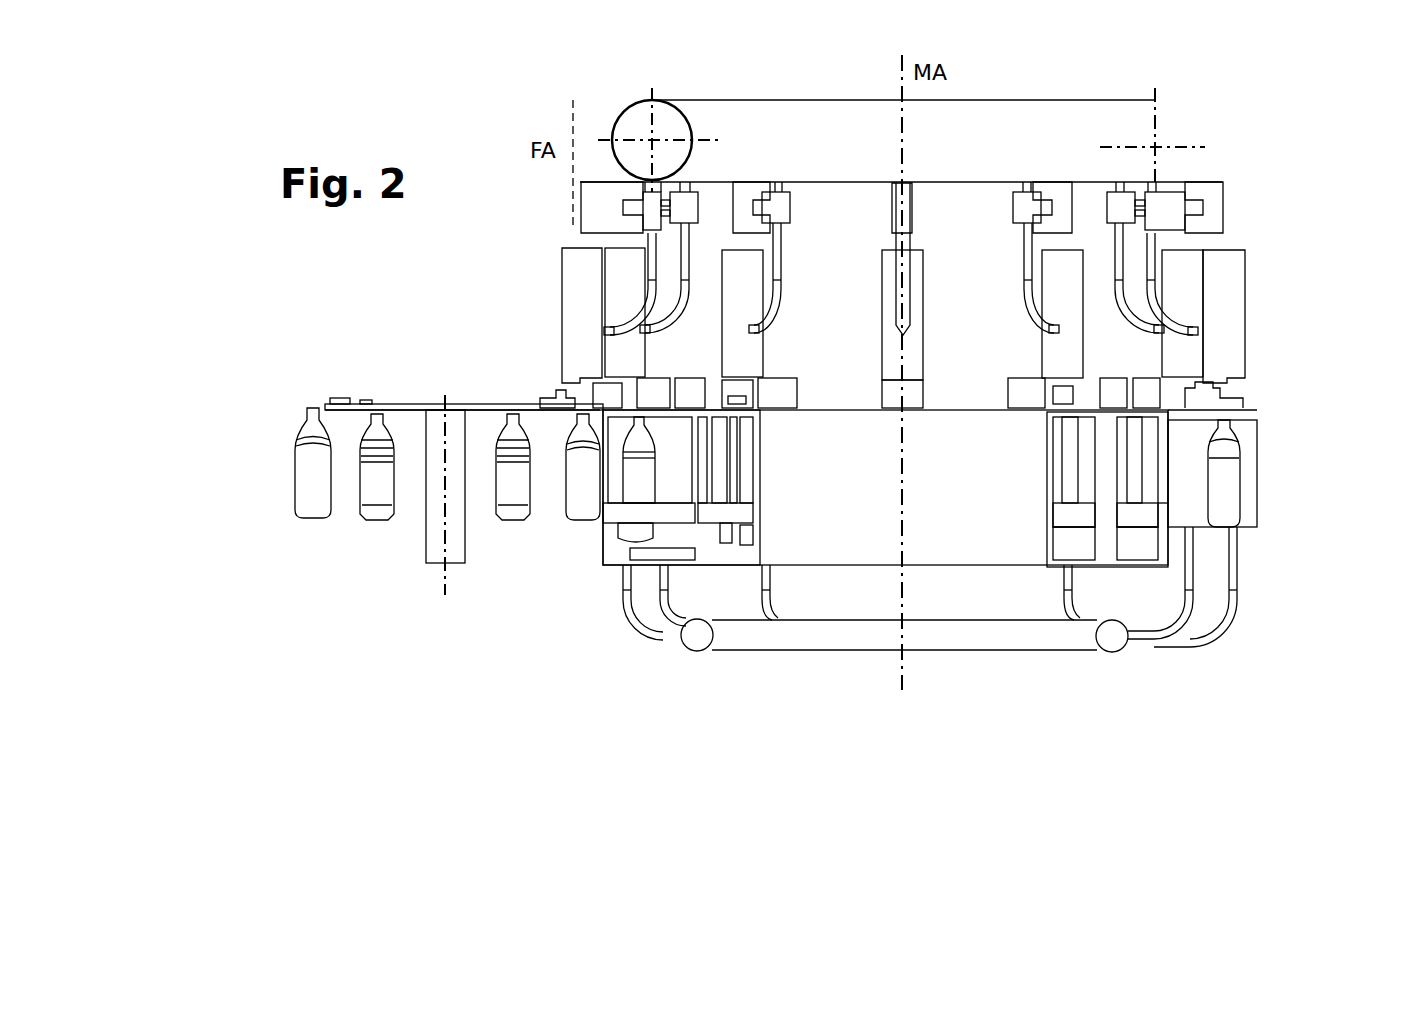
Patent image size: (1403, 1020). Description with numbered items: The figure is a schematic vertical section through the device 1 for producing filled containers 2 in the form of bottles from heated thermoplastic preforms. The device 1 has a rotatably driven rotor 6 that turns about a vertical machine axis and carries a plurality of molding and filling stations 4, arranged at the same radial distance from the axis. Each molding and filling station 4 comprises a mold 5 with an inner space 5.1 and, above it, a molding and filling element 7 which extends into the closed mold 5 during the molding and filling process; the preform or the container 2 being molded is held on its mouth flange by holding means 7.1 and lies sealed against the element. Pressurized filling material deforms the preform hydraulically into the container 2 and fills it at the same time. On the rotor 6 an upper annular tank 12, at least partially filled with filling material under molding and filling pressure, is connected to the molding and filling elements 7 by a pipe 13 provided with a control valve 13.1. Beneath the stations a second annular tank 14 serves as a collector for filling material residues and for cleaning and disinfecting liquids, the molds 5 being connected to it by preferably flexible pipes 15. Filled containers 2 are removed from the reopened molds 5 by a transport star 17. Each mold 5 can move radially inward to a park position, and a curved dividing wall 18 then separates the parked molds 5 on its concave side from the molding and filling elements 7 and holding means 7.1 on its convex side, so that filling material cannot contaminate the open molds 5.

The device 1 is at (1168, 58).
The container 2 is at (307, 480).
The molding and filling station 4 is at (1270, 392).
The mold 5 is at (675, 437).
The inner space 5.1 is at (645, 478).
The rotor 6 is at (940, 530).
The molding and filling element 7 is at (570, 318).
The holding means 7.1 is at (555, 402).
The annular tank 12 is at (632, 115).
The pipe 13 is at (777, 262).
The control valve 13.1 is at (783, 200).
The annular tank 14 is at (740, 640).
The pipe 15 is at (665, 612).
The transport star 17 is at (410, 402).
The wall 18 is at (600, 545).